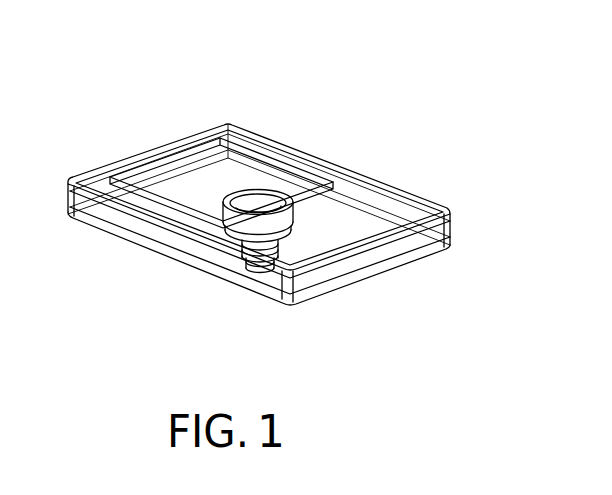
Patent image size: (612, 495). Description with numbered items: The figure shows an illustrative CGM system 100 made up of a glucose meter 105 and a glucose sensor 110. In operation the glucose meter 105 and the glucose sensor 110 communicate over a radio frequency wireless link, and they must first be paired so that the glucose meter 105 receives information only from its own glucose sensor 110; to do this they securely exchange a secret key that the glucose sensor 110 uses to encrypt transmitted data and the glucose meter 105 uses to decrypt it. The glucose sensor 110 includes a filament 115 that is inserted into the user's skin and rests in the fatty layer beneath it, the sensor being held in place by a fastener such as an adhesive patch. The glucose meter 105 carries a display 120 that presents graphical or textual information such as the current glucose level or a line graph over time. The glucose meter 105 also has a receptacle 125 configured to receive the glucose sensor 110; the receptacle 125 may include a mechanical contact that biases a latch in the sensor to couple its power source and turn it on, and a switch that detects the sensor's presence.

The CGM system 100 is at (304, 113).
The glucose meter 105 is at (365, 175).
The glucose sensor 110 is at (221, 222).
The filament 115 is at (242, 256).
The display 120 is at (175, 152).
The receptacle 125 is at (265, 262).